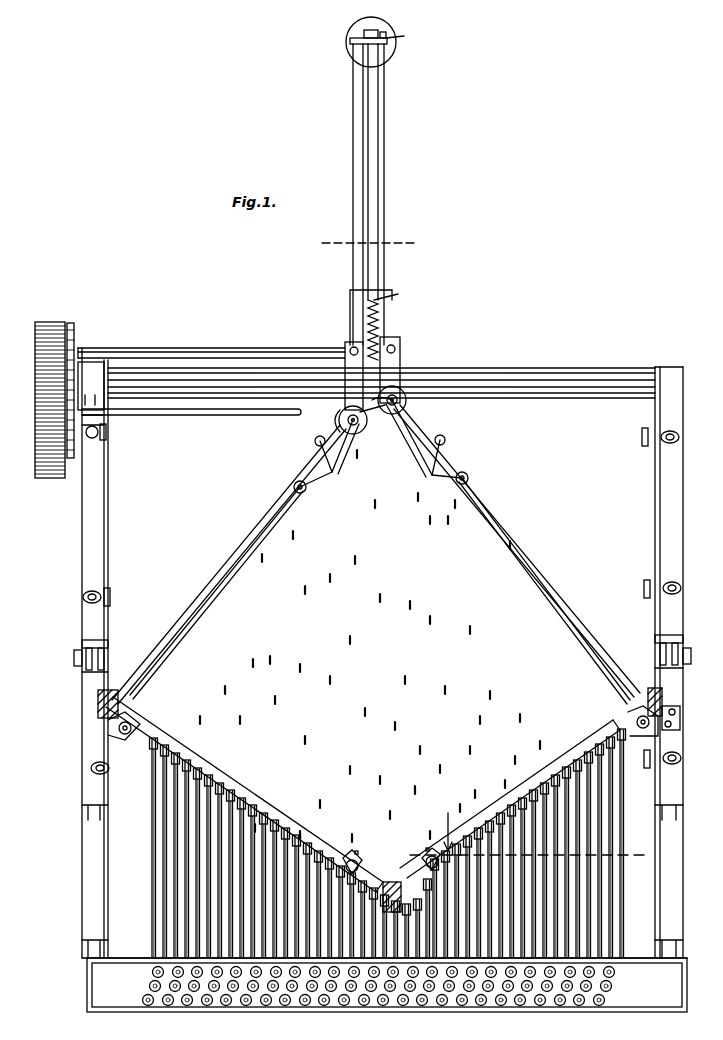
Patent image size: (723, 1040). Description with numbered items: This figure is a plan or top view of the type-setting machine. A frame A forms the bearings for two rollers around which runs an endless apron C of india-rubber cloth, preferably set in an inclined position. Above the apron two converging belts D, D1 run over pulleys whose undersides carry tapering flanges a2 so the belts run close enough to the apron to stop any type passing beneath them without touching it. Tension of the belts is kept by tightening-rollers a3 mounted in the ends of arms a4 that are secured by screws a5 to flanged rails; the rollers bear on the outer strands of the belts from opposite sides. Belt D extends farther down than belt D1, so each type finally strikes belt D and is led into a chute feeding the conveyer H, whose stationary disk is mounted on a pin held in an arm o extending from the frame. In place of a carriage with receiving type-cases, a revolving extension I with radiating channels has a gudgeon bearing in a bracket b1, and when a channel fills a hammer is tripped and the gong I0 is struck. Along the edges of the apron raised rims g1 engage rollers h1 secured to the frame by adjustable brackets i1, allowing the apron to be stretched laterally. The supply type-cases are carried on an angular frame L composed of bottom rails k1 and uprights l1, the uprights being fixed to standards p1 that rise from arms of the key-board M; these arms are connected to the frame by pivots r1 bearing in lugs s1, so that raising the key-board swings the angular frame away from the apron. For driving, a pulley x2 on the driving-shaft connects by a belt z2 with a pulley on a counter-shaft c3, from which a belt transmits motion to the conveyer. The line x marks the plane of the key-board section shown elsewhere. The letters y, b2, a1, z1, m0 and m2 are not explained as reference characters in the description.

The frame A is at (382, 653).
The endless apron C is at (385, 567).
The key-board M is at (384, 985).
The keys m2 is at (412, 985).
The revolving extension I is at (370, 191).
The gong I0 is at (372, 41).
The section line y- y is at (367, 243).
The section line x x is at (526, 838).
The bracket b1 is at (366, 311).
The cross bars b2 is at (381, 351).
The counter-shaft c3 is at (211, 344).
The conveyer H is at (387, 322).
The arm o is at (372, 365).
The belt z2 is at (179, 361).
The pulley x2 is at (63, 400).
The pivot wheel a1 is at (344, 406).
The tapering flanges a2 is at (379, 398).
The tightening-rollers a3 is at (380, 562).
The arms a4 is at (384, 463).
The screws a5 is at (385, 445).
The belt D1 is at (229, 564).
The belt D is at (517, 551).
The standards p1 is at (113, 715).
The uprights l1 is at (654, 706).
The adjustable brackets i1 is at (382, 598).
The rollers h1 is at (380, 593).
The lugs s1 is at (382, 645).
The pivots r1 is at (384, 656).
The raised rims g1 is at (382, 676).
The bottom rails k1 is at (363, 794).
The apex block z1 is at (394, 897).
The apex pivots m0 is at (397, 859).
The angular frame L is at (388, 884).